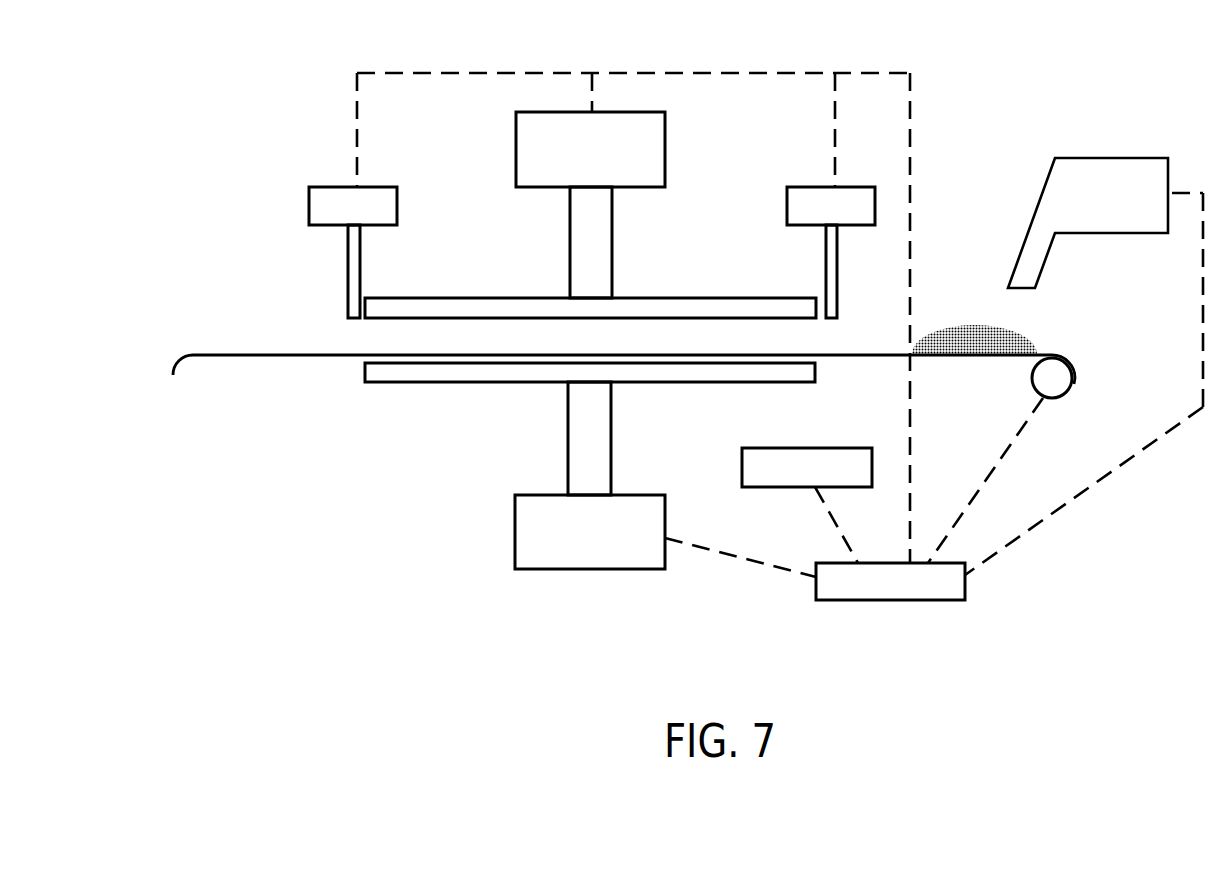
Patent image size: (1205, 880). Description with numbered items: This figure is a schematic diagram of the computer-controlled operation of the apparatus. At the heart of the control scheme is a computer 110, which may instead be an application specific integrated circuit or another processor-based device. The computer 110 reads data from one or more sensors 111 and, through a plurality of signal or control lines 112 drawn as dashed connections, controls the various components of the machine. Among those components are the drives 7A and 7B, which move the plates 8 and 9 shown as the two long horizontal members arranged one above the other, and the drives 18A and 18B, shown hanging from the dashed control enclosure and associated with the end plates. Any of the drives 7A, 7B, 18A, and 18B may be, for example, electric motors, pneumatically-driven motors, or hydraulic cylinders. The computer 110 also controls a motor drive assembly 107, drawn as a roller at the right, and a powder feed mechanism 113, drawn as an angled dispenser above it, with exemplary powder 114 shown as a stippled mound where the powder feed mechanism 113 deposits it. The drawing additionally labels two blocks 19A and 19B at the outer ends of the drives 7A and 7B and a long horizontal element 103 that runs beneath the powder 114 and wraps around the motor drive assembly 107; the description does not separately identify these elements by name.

The drive 7A is at (618, 240).
The drive 7B is at (617, 452).
The plate 8 is at (687, 290).
The plate 9 is at (715, 388).
The drive 18A is at (376, 216).
The drive 18B is at (854, 216).
The upper actuator 19A is at (612, 162).
The lower actuator 19B is at (612, 546).
The web 103 is at (248, 363).
The motor drive assembly 107 is at (1032, 387).
The computer 110 is at (911, 596).
The sensors 111 is at (825, 480).
The signal or control lines 112 is at (913, 177).
The powder feed mechanism 113 is at (1122, 206).
The powder 114 is at (1040, 332).